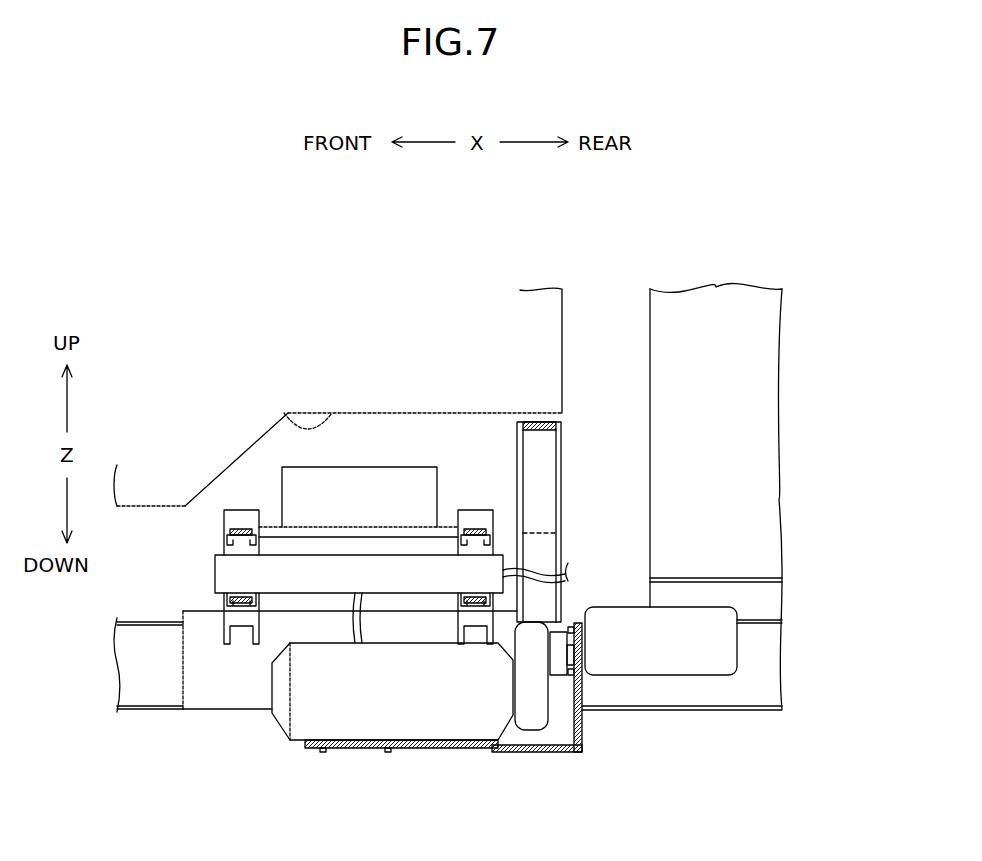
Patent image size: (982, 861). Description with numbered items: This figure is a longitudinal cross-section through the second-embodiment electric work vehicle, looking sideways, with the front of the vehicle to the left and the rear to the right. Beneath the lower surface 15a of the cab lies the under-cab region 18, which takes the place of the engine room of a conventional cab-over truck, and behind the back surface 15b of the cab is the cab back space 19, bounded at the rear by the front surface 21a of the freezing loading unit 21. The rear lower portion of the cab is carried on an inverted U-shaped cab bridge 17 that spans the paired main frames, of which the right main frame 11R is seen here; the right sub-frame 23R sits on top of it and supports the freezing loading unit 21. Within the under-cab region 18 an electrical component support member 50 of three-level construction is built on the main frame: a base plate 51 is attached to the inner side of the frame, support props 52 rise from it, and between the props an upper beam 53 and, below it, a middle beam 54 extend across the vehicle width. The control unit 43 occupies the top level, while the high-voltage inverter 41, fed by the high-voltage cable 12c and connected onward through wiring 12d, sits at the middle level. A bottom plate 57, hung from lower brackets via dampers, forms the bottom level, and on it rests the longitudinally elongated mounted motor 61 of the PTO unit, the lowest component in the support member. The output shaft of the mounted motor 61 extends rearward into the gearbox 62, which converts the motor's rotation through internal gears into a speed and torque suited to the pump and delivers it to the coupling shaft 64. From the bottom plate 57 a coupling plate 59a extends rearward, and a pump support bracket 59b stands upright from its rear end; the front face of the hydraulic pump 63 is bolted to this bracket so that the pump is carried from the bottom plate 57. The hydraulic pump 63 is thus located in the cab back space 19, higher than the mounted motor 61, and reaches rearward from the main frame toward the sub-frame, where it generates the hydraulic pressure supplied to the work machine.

The right main frame 11R is at (760, 669).
The high-voltage cable 12c is at (512, 565).
The wiring 12d is at (348, 625).
The lower surface of the cab 15a is at (290, 424).
The back surface of the cab 15b is at (562, 314).
The cab bridge 17 is at (562, 470).
The under-cab region 18 is at (371, 449).
The cab back space 19 is at (611, 390).
The freezing loading unit 21 is at (710, 336).
The front surface of the freezing loading unit 21a is at (649, 337).
The right sub-frame 23R is at (760, 600).
The high-voltage inverter 41 is at (215, 570).
The control unit 43 is at (403, 467).
The electrical component support member 50 is at (256, 476).
The base plate 51 is at (222, 683).
The support prop 52 is at (232, 508).
The upper beam 53 is at (458, 540).
The middle beam 54 is at (458, 600).
The bottom plate 57 is at (366, 755).
The coupling plate 59a is at (490, 752).
The pump support bracket 59b is at (585, 728).
The mounted motor 61 is at (425, 725).
The gearbox 62 is at (535, 733).
The hydraulic pump 63 is at (658, 675).
The coupling shaft 64 is at (575, 633).